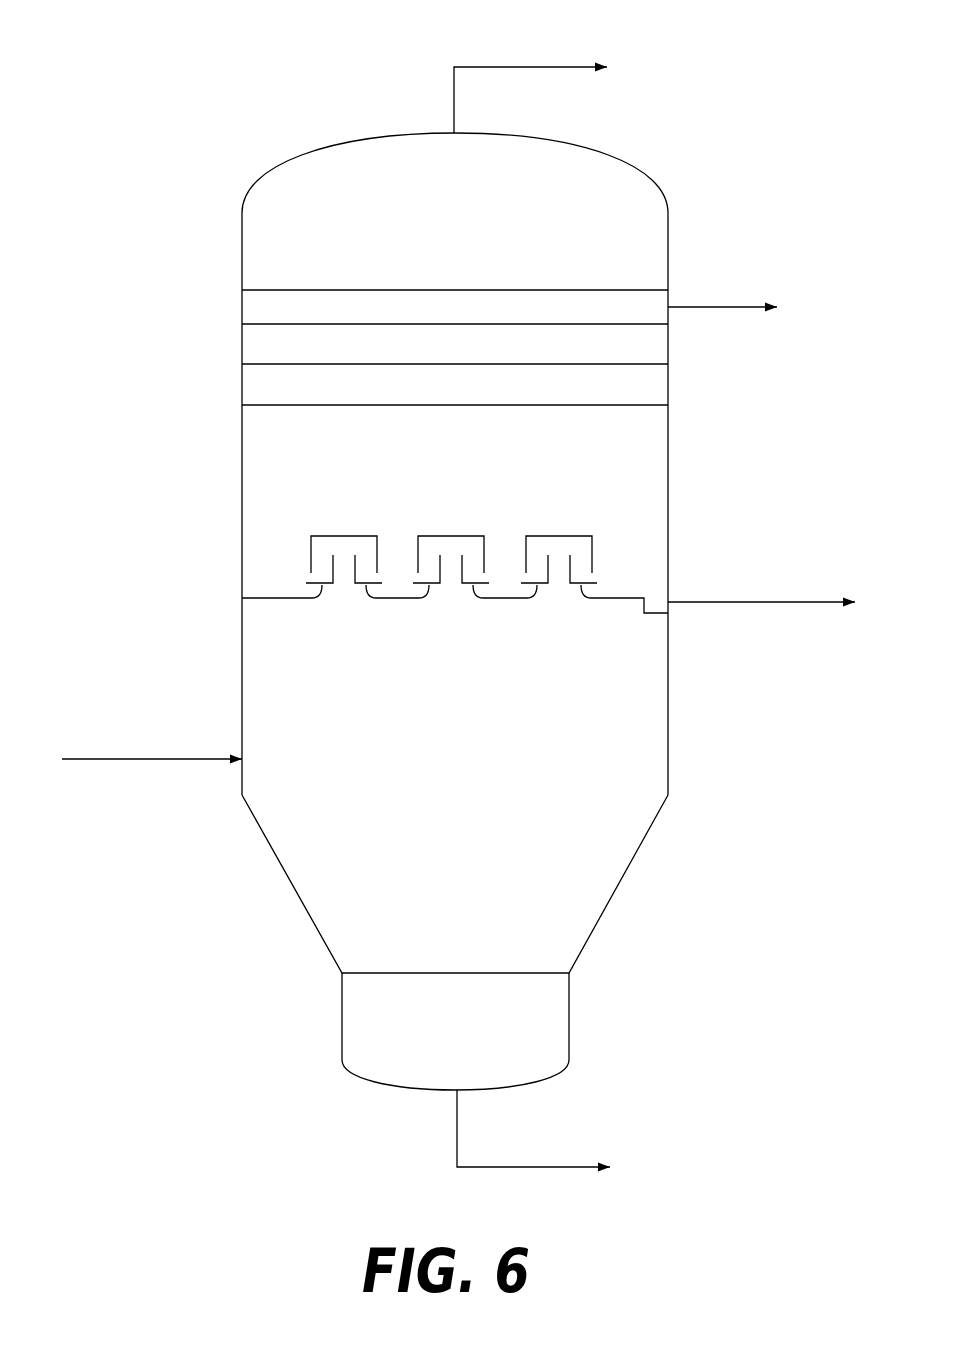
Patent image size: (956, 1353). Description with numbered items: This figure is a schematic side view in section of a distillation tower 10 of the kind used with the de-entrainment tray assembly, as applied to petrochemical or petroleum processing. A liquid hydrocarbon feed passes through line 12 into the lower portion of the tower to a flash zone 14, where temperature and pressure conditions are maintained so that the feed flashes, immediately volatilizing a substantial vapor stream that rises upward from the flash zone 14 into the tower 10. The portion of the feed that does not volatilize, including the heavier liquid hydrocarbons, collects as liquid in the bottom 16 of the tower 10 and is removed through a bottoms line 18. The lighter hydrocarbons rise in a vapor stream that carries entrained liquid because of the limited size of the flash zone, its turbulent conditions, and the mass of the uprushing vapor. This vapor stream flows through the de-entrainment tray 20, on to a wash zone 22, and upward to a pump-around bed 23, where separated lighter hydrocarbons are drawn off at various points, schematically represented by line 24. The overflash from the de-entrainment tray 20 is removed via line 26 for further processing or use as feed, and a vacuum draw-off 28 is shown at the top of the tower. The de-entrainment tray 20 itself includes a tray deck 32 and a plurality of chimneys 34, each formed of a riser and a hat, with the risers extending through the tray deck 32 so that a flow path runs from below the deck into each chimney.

The distillation tower 10 is at (228, 235).
The line 12 is at (147, 758).
The flash zone 14 is at (475, 740).
The bottom 16 is at (603, 1030).
The bottoms line 18 is at (575, 1167).
The de-entrainment tray 20 is at (416, 550).
The wash zone 22 is at (228, 387).
The pump-around bed 23 is at (228, 292).
The line 24 is at (696, 307).
The line 26 is at (735, 602).
The vacuum draw-off 28 is at (518, 67).
The tray deck 32 is at (288, 599).
The chimneys 34 is at (607, 543).